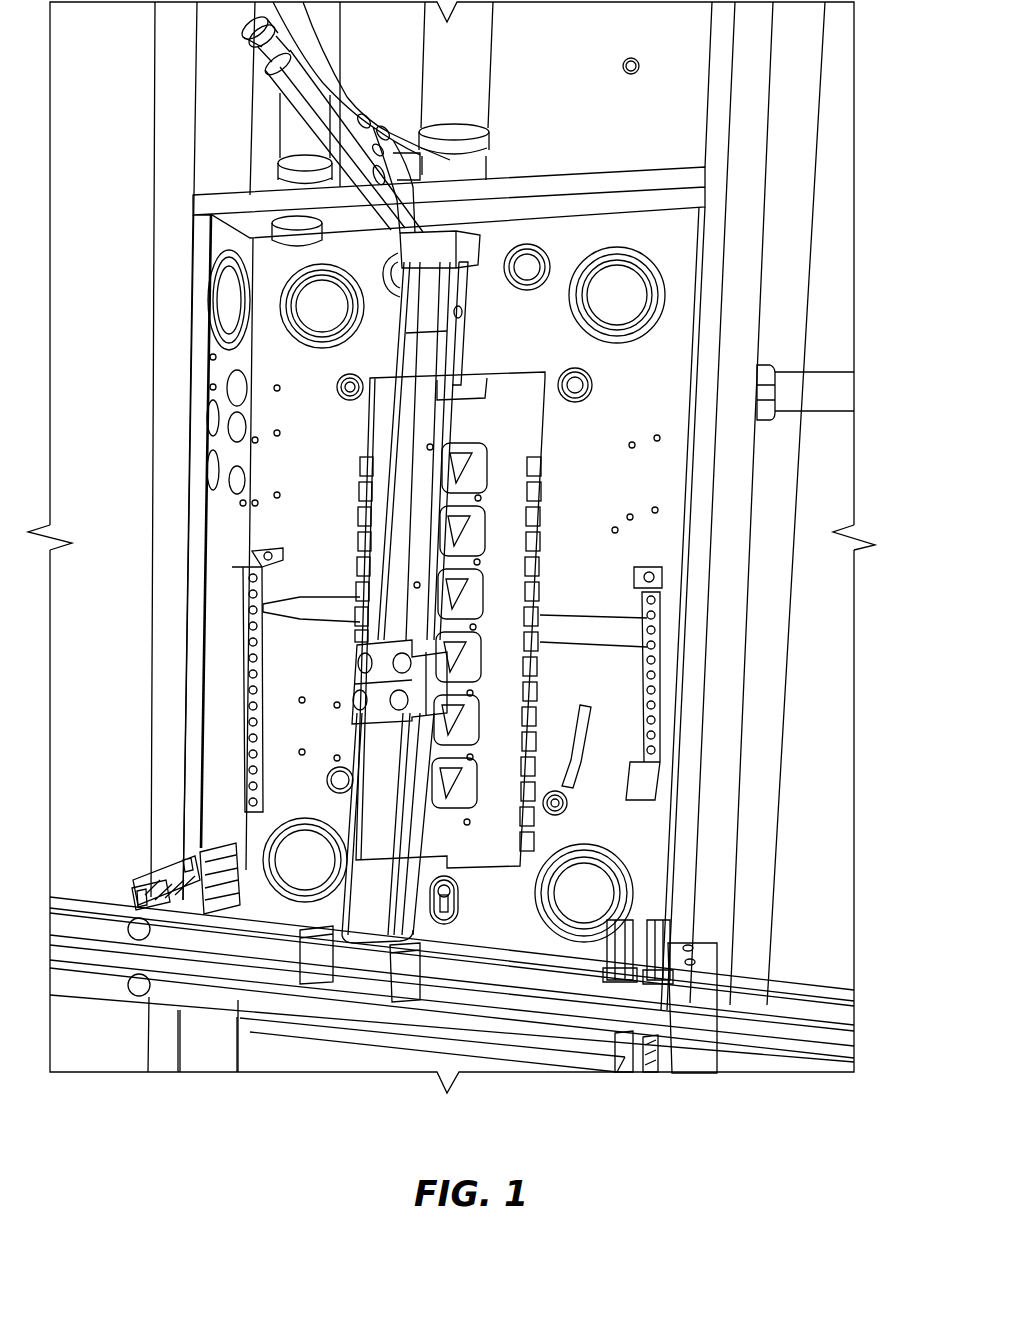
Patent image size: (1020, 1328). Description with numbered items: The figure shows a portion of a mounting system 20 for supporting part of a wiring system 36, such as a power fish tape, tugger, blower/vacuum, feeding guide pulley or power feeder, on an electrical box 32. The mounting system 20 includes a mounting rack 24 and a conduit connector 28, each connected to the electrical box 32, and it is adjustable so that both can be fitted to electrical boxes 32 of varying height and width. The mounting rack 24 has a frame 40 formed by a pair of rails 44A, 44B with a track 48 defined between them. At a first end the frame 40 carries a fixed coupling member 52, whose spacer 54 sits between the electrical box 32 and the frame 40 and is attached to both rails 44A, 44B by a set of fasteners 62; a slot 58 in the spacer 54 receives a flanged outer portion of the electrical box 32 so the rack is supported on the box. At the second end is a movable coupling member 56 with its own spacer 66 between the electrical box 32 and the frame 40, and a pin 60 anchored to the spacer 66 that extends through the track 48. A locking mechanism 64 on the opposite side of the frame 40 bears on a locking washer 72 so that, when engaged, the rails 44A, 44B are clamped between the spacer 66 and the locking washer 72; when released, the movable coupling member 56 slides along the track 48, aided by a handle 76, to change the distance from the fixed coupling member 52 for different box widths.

The mounting system 20 is at (838, 345).
The mounting rack 24 is at (757, 905).
The conduit connector 28 is at (266, 110).
The electrical box 32 is at (744, 236).
The wiring system 36 is at (372, 912).
The frame 40 is at (352, 945).
The rail 44A is at (248, 950).
The rail 44B is at (540, 1035).
The track 48 is at (545, 1052).
The fixed coupling member 52 is at (140, 888).
The spacer 54 is at (190, 855).
The movable coupling member 56 is at (660, 932).
The slot 58 is at (202, 862).
The pin 60 is at (630, 1060).
The fasteners 62 is at (139, 932).
The locking mechanism 64 is at (660, 1027).
The spacer 66 is at (632, 915).
The locking washer 72 is at (625, 1035).
The handle 76 is at (692, 1057).